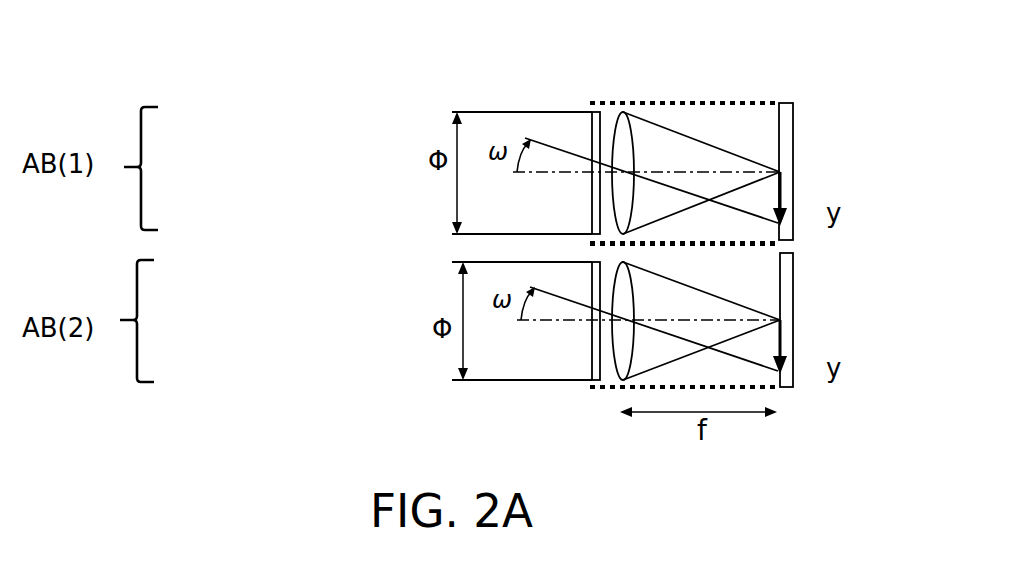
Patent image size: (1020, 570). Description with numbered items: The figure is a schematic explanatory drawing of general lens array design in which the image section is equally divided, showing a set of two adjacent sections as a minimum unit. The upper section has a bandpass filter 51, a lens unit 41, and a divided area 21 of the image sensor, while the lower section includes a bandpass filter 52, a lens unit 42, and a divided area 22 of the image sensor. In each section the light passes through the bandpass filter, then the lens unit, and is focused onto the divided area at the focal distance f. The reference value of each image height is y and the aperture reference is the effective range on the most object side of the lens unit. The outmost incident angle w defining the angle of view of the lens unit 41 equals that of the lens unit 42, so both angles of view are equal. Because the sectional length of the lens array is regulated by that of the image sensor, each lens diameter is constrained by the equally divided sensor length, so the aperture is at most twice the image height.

The bandpass filter 51 is at (588, 108).
The lens unit 41 is at (625, 110).
The divided area 21 is at (783, 103).
The bandpass filter 52 is at (593, 360).
The lens unit 42 is at (623, 383).
The divided area 22 is at (784, 387).